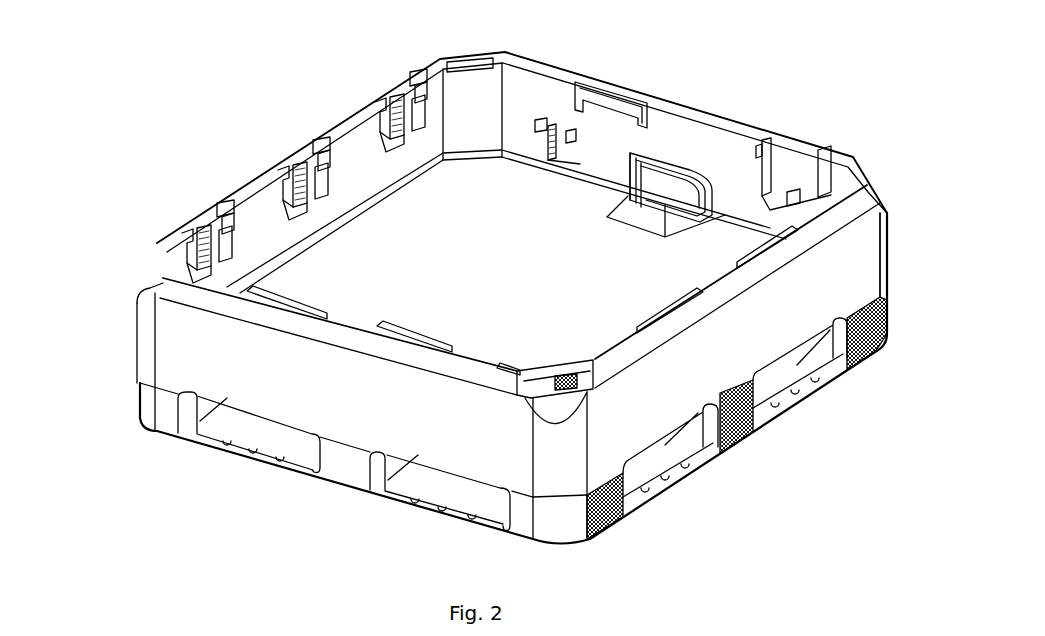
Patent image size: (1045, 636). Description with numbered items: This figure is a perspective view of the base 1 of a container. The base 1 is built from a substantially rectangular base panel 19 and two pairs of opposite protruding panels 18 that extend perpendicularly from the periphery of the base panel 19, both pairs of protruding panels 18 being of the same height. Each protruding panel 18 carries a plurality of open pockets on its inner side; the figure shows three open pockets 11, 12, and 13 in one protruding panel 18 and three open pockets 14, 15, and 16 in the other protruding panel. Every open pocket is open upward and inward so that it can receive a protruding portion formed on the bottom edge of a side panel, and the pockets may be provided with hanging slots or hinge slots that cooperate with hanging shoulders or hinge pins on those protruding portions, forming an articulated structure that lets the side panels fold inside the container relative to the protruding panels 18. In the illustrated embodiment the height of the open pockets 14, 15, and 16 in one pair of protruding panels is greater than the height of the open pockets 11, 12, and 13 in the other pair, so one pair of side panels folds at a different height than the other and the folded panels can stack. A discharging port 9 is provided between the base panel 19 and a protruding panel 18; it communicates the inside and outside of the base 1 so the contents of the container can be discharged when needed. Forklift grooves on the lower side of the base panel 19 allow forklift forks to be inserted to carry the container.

The base 1 is at (205, 370).
The discharging port 9 is at (670, 200).
The open pocket 11 is at (213, 225).
The open pocket 12 is at (303, 163).
The open pocket 13 is at (402, 102).
The open pocket 14 is at (553, 112).
The open pocket 15 is at (668, 130).
The open pocket 16 is at (793, 183).
The protruding panel 18 is at (867, 260).
The base panel 19 is at (430, 223).